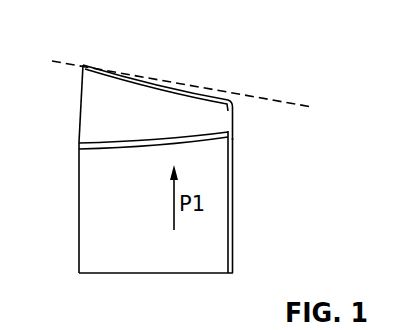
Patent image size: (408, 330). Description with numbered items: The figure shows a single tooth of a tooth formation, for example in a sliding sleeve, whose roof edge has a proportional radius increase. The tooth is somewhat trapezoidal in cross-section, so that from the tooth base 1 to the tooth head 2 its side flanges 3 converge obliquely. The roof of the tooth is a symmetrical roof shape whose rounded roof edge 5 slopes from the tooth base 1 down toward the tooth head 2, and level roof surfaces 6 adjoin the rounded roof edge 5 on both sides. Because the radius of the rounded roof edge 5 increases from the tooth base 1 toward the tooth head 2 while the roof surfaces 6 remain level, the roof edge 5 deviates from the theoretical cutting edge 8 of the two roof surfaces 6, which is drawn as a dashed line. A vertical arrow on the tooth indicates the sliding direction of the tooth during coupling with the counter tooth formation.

The tooth base 1 is at (78, 197).
The tooth head 2 is at (235, 198).
The side flanges 3 is at (140, 223).
The roof edge 5 is at (163, 83).
The roof surfaces 6 is at (147, 113).
The theoretical cutting edge 8 is at (257, 97).